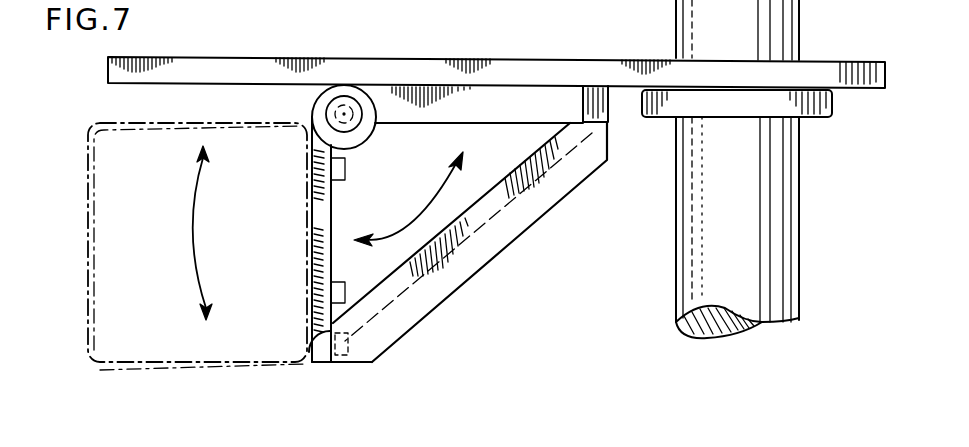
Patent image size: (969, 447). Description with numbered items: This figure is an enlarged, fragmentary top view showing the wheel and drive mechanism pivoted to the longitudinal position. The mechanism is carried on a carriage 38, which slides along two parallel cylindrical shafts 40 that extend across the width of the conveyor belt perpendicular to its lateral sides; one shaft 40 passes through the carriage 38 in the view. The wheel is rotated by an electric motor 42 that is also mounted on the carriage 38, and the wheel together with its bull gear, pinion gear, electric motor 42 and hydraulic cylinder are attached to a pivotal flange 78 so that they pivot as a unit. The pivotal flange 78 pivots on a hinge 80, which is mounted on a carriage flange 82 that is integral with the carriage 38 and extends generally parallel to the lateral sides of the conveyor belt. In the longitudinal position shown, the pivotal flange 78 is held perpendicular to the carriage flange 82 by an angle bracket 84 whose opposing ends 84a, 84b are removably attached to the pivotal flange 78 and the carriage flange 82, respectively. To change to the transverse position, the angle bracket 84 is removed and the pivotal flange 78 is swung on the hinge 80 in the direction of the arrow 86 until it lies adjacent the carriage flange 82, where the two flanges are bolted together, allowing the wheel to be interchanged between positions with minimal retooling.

The carriage 38 is at (230, 77).
The shaft 40 is at (760, 222).
The electric motor 42 is at (218, 352).
The pivotal flange 78 is at (327, 353).
The hinge 80 is at (347, 85).
The carriage flange 82 is at (489, 103).
The angle bracket 84 is at (440, 290).
The end of angle bracket 84a is at (304, 364).
The end of angle bracket 84b is at (608, 122).
The arrow 86 is at (410, 218).